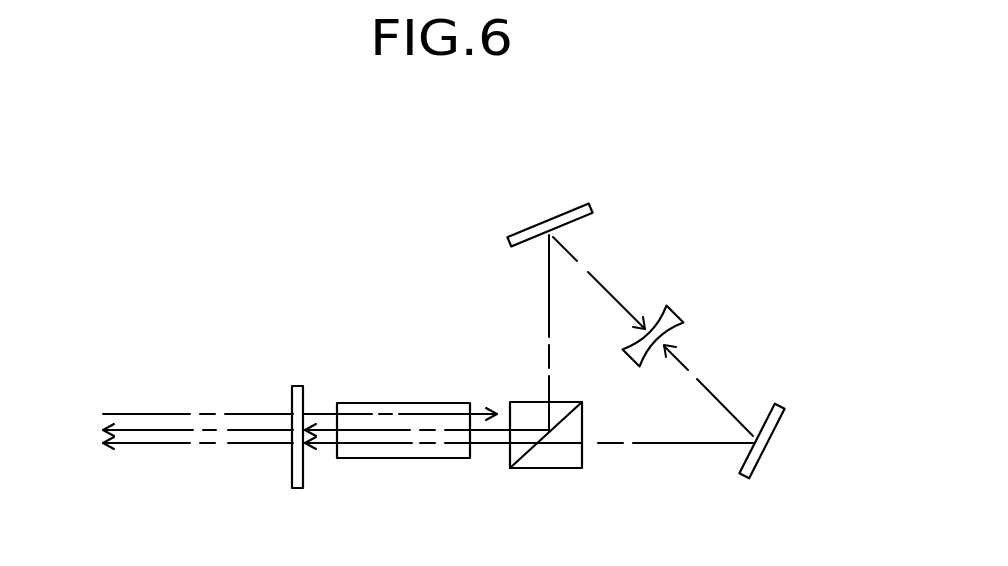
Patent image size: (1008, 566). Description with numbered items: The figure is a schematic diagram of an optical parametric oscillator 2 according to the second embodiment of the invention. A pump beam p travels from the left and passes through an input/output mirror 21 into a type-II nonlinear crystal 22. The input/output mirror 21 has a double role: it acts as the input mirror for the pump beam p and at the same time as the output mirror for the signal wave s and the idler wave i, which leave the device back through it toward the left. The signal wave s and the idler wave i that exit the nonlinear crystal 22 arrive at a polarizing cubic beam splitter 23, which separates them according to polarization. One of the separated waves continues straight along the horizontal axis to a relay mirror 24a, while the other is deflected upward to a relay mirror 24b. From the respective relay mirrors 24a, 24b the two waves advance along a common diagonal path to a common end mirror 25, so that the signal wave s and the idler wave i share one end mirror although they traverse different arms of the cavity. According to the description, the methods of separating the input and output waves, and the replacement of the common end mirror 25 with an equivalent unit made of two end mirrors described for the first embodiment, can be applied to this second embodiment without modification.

The optical parametric oscillator 2 is at (333, 251).
The input/output mirror 21 is at (303, 399).
The type-II nonlinear crystal 22 is at (398, 460).
The polarizing cubic beam splitter 23 is at (547, 470).
The relay mirror 24a is at (760, 456).
The relay mirror 24b is at (530, 229).
The common end mirror 25 is at (688, 322).
The pump beam p is at (155, 413).
The idler wave i is at (134, 444).
The signal wave s is at (185, 444).